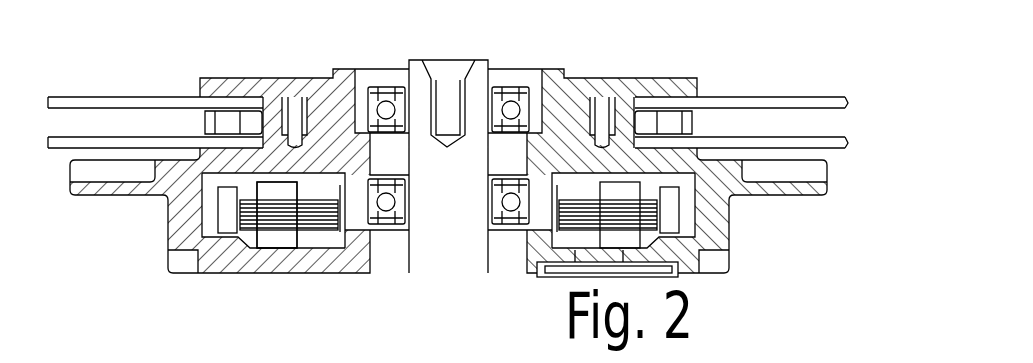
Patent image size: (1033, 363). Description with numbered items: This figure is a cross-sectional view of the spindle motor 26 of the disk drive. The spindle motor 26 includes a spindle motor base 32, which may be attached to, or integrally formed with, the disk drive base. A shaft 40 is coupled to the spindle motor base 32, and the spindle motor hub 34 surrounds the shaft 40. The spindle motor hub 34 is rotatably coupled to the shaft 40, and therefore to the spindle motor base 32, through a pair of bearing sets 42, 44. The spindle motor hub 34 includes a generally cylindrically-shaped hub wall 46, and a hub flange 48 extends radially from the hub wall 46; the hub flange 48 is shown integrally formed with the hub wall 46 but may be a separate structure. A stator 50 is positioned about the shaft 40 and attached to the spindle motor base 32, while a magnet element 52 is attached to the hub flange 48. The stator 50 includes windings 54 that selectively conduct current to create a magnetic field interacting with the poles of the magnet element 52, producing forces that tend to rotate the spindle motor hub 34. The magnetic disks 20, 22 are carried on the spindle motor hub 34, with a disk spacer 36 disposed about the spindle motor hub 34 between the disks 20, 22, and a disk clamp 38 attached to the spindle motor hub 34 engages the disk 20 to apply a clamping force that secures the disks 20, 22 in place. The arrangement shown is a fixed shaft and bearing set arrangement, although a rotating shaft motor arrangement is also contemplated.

The magnetic disk 20 is at (835, 97).
The magnetic disk 22 is at (842, 150).
The spindle motor 26 is at (226, 48).
The spindle motor base 32 is at (168, 230).
The spindle motor hub 34 is at (330, 115).
The disk spacer 36 is at (695, 120).
The disk clamp 38 is at (658, 81).
The shaft 40 is at (441, 265).
The bearing set 42 is at (367, 107).
The bearing set 44 is at (370, 205).
The hub wall 46 is at (622, 116).
The hub flange 48 is at (688, 163).
The stator 50 is at (322, 222).
The magnet element 52 is at (222, 218).
The windings 54 is at (277, 230).